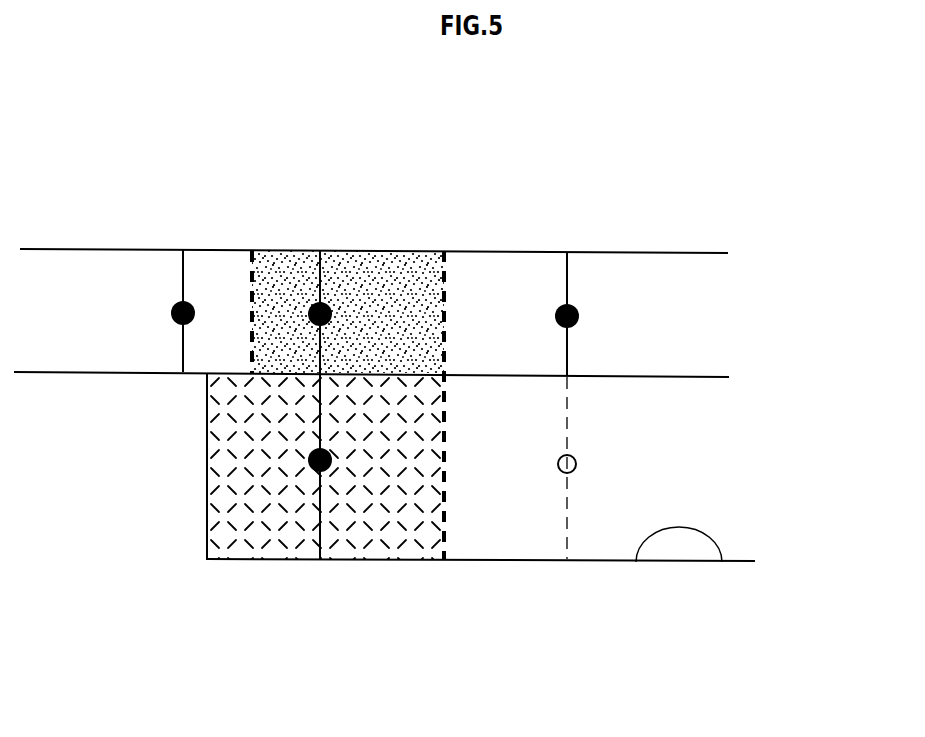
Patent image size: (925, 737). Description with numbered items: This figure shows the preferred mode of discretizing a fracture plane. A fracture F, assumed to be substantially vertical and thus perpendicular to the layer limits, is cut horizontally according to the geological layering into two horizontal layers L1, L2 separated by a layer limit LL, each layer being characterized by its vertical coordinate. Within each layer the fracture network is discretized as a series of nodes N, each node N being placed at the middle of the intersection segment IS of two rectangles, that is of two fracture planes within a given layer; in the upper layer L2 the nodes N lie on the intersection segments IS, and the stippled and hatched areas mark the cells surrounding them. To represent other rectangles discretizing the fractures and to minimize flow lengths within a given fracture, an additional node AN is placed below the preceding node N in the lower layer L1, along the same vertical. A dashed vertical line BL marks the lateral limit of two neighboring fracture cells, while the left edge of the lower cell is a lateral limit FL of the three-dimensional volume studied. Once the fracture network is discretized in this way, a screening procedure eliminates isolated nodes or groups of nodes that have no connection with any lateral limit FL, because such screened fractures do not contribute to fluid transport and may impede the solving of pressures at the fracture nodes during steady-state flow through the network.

The node N is at (290, 405).
The intersection segment IS is at (330, 232).
The layer limit LL is at (755, 378).
The additional node AN is at (608, 473).
The lateral limit FL is at (193, 545).
The lateral limit of two neighboring fracture cells BL is at (444, 590).
The fracture F is at (679, 545).
The first horizontal layer L1 is at (111, 466).
The second horizontal layer L2 is at (105, 312).